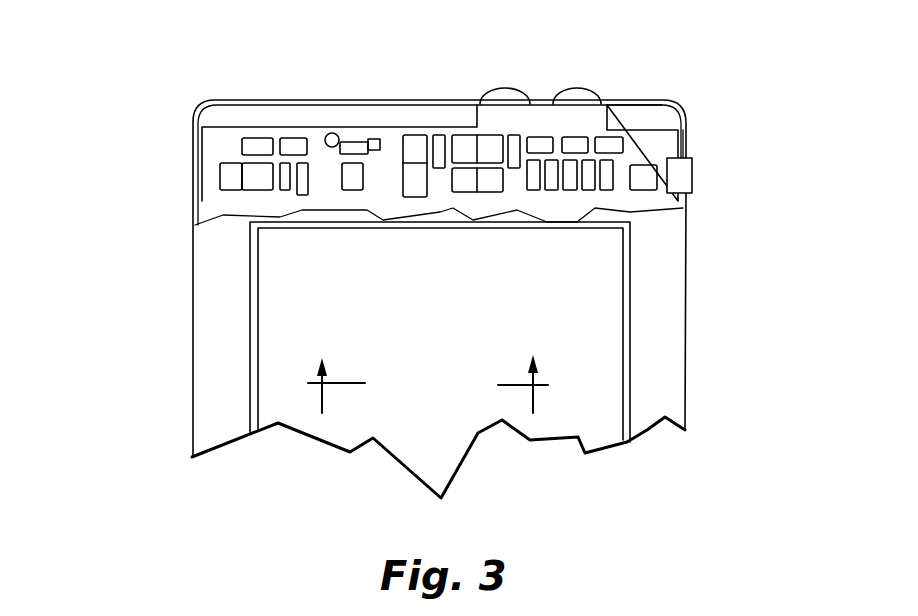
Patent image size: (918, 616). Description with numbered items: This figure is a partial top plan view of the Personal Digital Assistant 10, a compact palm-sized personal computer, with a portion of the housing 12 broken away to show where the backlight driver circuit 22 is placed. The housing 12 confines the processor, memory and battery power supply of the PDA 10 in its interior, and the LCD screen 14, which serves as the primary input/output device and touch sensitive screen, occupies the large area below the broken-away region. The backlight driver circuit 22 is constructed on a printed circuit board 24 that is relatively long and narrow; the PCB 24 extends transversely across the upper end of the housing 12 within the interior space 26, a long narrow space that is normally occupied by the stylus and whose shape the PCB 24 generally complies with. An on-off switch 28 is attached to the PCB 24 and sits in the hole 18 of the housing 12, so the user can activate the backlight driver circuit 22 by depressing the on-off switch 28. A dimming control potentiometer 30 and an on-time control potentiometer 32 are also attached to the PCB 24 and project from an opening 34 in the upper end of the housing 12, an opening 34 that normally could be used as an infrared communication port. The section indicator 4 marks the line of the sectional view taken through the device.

The Personal Digital Assistant 10 is at (160, 363).
The housing 12 is at (218, 427).
The LCD screen 14 is at (593, 407).
The hole 18 is at (683, 158).
The backlight driver circuit 22 is at (419, 118).
The printed circuit board 24 is at (220, 142).
The interior space 26 is at (215, 206).
The on-off switch 28 is at (688, 186).
The dimming control potentiometer 30 is at (573, 88).
The on-time control potentiometer 32 is at (500, 86).
The opening 34 is at (612, 103).
The section line indicator 4 is at (428, 366).